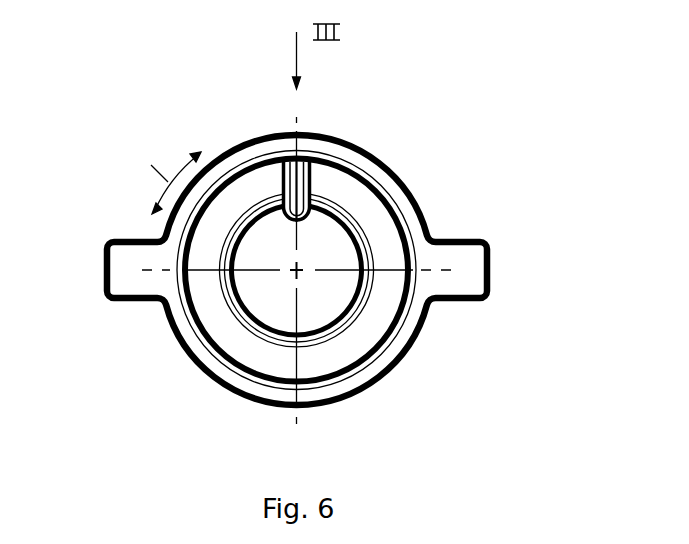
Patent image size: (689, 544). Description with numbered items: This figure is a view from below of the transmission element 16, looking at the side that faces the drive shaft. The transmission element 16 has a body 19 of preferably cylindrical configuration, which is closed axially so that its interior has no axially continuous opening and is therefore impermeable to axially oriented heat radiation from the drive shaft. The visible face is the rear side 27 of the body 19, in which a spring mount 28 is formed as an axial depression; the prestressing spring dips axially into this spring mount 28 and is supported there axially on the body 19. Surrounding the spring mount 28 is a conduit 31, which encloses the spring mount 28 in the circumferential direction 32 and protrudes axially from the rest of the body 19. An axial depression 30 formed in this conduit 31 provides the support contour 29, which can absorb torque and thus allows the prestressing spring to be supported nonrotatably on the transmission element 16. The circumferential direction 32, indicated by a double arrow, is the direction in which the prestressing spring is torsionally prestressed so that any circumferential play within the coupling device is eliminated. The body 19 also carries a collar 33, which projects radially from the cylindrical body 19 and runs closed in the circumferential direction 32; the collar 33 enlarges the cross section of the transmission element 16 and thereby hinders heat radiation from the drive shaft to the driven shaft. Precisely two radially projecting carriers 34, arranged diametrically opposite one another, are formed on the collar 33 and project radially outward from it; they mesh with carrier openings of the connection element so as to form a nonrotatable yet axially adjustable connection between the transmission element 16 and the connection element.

The transmission element 16 is at (475, 137).
The body 19 is at (430, 220).
The rear side 27 is at (365, 200).
The spring mount 28 is at (277, 315).
The support contour 29 is at (305, 160).
The axial depression 30 is at (290, 188).
The conduit 31 is at (365, 330).
The circumferential direction 32 is at (153, 179).
The collar 33 is at (190, 338).
The carriers 34 is at (118, 267).